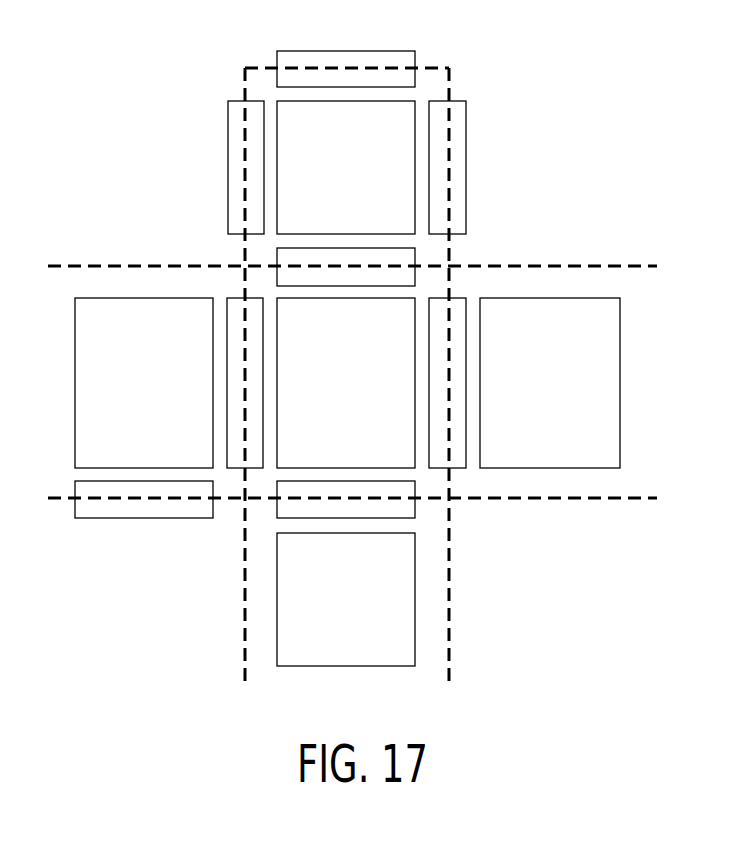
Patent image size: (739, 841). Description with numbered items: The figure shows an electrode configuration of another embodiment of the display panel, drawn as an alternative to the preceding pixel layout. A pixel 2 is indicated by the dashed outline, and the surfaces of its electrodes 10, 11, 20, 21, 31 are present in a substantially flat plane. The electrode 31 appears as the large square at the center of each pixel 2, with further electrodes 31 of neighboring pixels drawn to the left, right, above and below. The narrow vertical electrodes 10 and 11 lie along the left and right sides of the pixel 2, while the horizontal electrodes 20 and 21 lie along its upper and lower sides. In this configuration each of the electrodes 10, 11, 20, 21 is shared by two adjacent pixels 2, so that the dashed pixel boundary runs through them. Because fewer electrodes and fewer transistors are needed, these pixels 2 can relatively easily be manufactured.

The pixel 2 is at (423, 266).
The electrode 10 is at (233, 168).
The electrode 11 is at (455, 167).
The electrode 20 is at (288, 258).
The electrode 21 is at (408, 61).
The electrode 31 is at (347, 383).